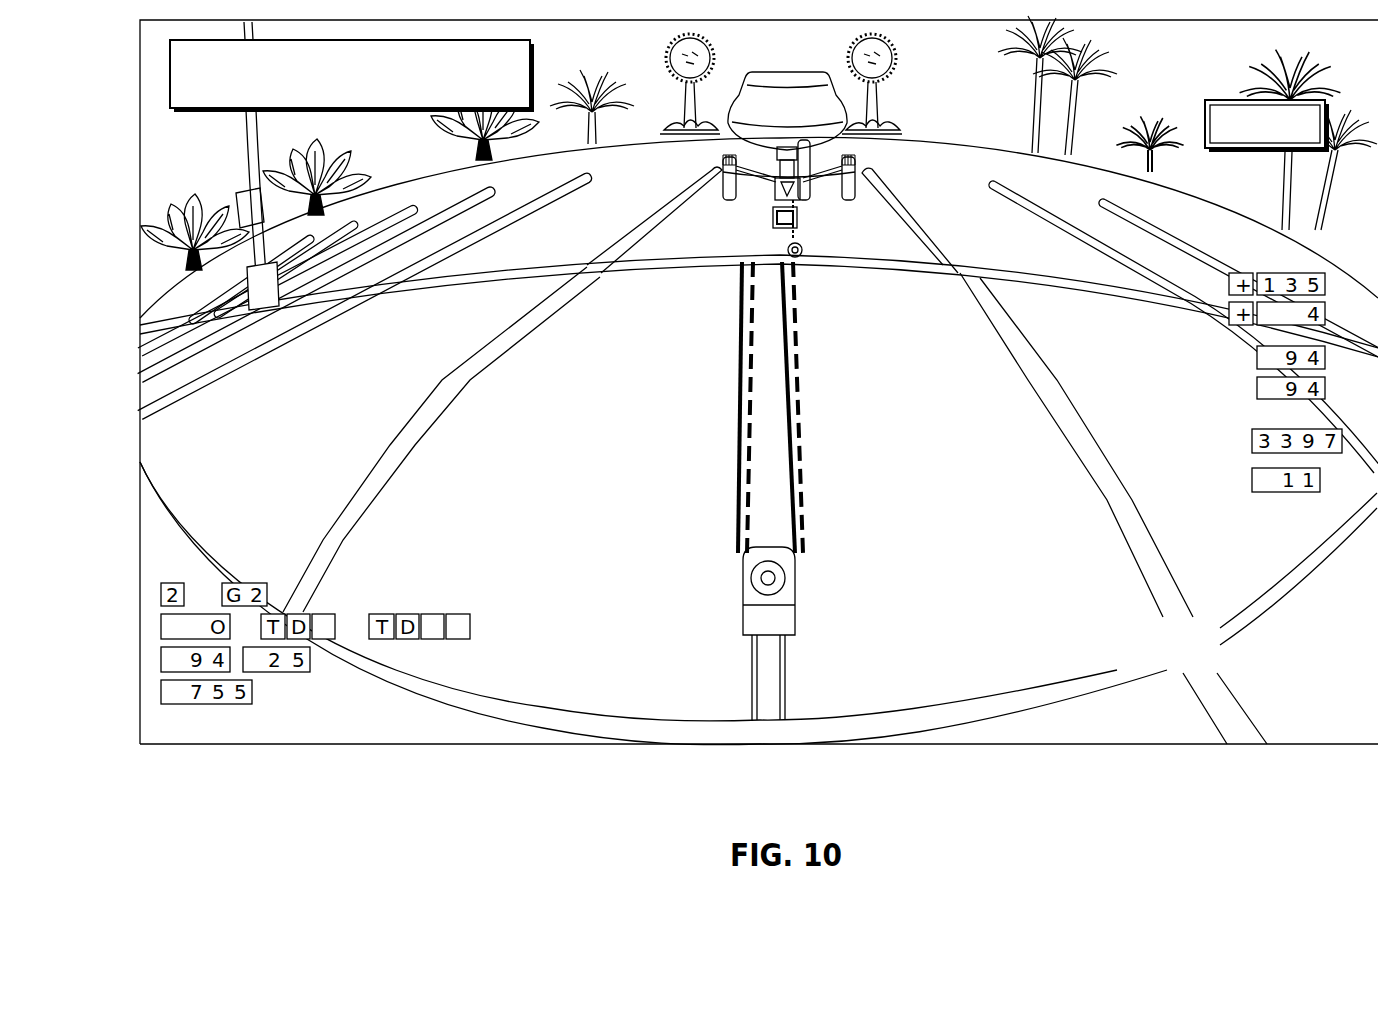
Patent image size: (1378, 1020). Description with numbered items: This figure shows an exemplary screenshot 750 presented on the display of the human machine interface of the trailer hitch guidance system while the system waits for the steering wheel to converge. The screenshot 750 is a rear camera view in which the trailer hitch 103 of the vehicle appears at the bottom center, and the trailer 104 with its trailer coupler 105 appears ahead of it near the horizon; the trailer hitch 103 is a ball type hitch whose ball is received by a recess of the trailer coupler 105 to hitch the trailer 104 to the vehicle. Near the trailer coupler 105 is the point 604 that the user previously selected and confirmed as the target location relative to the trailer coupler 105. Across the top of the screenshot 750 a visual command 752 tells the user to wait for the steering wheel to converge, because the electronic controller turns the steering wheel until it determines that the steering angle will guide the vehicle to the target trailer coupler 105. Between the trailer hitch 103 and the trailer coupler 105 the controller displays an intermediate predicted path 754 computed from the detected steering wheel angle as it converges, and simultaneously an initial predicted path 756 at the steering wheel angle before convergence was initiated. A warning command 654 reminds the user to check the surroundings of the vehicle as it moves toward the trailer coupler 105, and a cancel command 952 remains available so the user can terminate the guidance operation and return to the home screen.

The screenshot 750 is at (130, 40).
The visual command 752 is at (170, 73).
The cancel command 952 is at (1205, 123).
The trailer 104 is at (857, 160).
The trailer coupler 105 is at (796, 214).
The point 604 is at (775, 219).
The initial predicted path 756 is at (740, 336).
The intermediate predicted path 754 is at (796, 315).
The trailer hitch 103 is at (786, 578).
The warning command 654 is at (1095, 618).